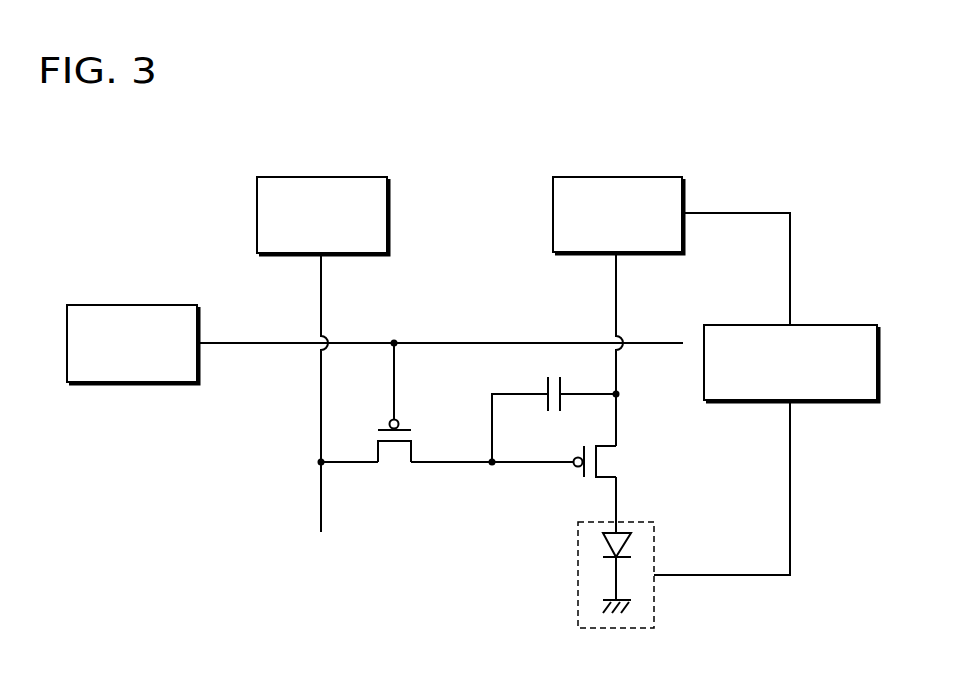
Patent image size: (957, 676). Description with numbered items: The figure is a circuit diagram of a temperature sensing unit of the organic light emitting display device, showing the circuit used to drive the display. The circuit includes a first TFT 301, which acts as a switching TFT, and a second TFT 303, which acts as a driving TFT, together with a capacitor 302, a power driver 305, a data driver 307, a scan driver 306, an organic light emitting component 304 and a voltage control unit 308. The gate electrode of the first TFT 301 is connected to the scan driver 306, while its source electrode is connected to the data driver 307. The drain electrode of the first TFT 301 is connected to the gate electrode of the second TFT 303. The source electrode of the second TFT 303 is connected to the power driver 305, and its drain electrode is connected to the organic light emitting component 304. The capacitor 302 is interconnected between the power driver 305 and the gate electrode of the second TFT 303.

The first TFT 301 is at (394, 465).
The capacitor 302 is at (554, 374).
The second TFT 303 is at (620, 462).
The organic light emitting component 304 is at (655, 543).
The power driver 305 is at (620, 176).
The scan driver 306 is at (133, 305).
The data driver 307 is at (323, 176).
The voltage control unit 308 is at (812, 325).